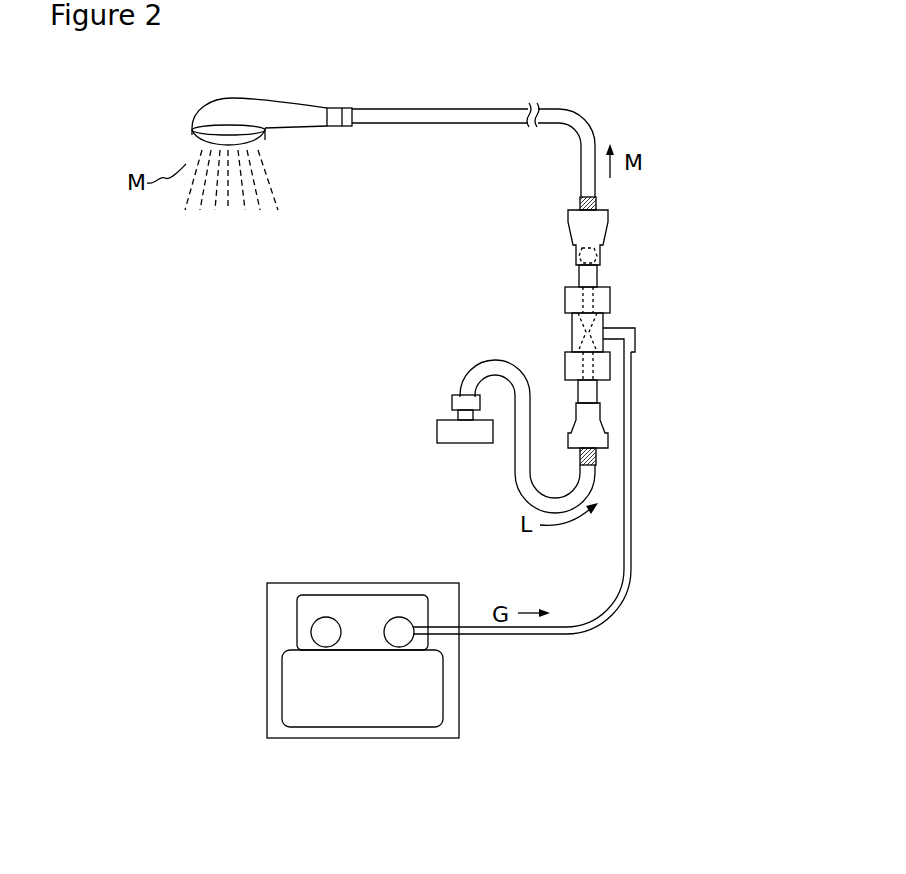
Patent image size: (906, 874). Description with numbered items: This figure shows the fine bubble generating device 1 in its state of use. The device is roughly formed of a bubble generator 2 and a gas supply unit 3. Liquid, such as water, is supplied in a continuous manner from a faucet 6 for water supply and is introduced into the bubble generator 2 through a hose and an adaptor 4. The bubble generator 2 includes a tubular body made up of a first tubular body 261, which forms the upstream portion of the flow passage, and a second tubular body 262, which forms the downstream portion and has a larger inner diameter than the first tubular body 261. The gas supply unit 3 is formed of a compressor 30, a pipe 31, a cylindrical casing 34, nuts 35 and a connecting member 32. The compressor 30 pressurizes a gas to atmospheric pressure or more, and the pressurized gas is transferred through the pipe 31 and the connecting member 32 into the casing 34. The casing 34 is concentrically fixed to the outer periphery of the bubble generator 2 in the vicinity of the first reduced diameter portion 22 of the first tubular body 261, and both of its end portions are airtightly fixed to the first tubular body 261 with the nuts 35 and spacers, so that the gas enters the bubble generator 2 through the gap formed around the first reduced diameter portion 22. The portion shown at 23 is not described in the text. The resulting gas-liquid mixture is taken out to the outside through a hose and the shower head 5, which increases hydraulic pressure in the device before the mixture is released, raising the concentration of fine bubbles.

The fine bubble generating device 1 is at (692, 491).
The bubble generator 2 is at (614, 276).
The gas supply unit 3 is at (636, 587).
The adaptor 4 is at (607, 428).
The shower head 5 is at (243, 110).
The faucet 6 is at (437, 435).
The first reduced diameter portion 22 is at (572, 330).
The outlet passage 23 is at (598, 250).
The compressor 30 is at (357, 595).
The pipe 31 is at (587, 628).
The connecting member 32 is at (636, 333).
The casing 34 is at (573, 340).
The nuts 35 is at (610, 297).
The first tubular body 261 is at (577, 278).
The second tubular body 262 is at (573, 245).